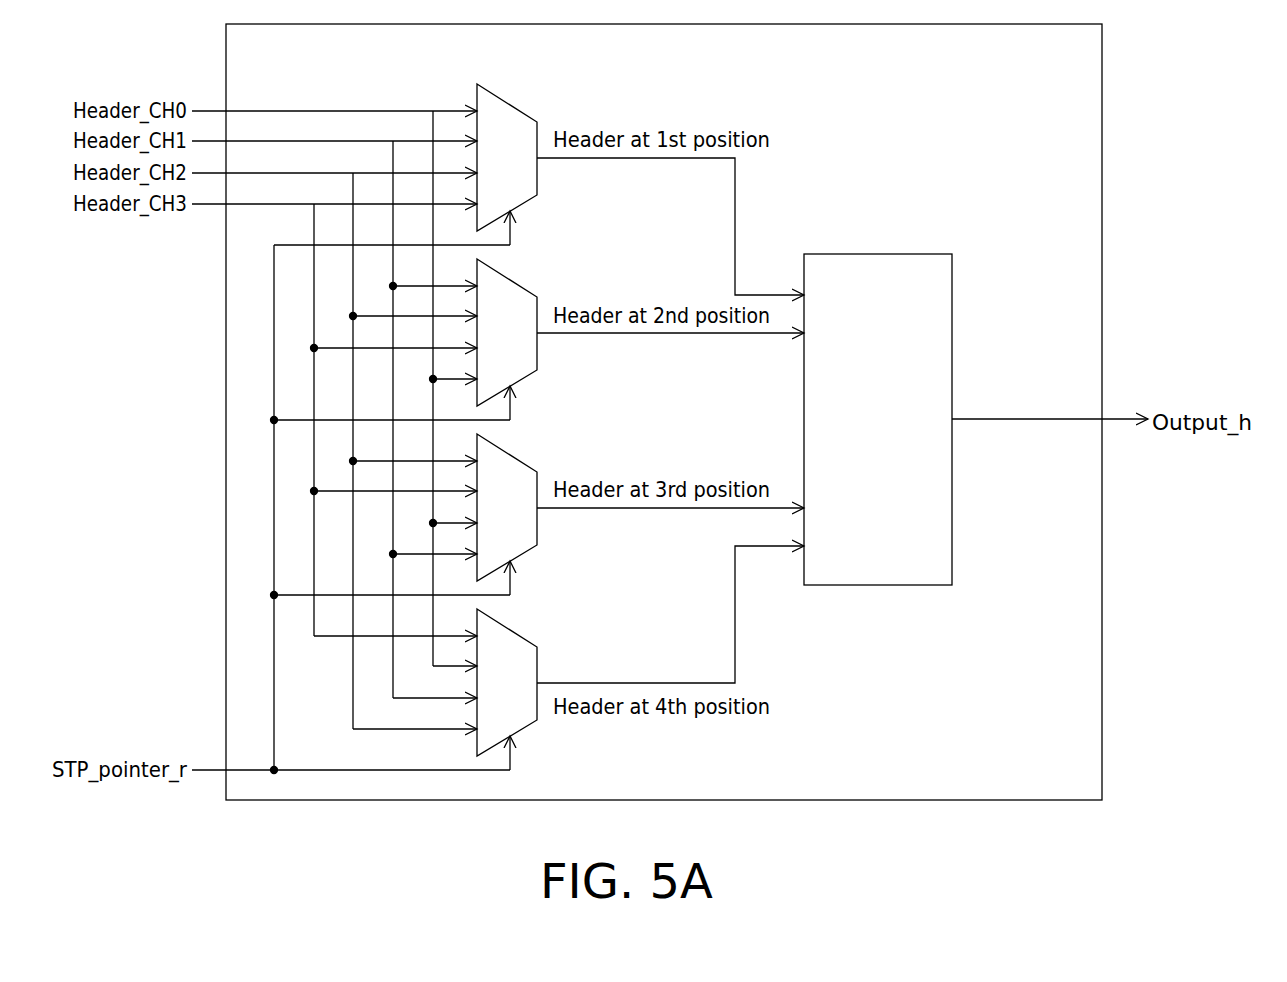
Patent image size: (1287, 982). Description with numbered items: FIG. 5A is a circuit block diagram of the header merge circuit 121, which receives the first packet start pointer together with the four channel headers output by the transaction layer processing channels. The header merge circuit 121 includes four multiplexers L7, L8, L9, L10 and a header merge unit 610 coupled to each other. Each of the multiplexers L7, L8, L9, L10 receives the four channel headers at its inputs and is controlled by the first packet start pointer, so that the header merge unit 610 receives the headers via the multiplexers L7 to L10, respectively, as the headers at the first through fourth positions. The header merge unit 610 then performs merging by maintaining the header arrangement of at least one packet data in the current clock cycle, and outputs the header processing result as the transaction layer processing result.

The header merge unit 610 is at (880, 253).
The header merge circuit 121 is at (1165, 838).
The multiplexer L7 is at (509, 163).
The multiplexer L8 is at (509, 338).
The multiplexer L9 is at (509, 513).
The multiplexer L10 is at (516, 688).